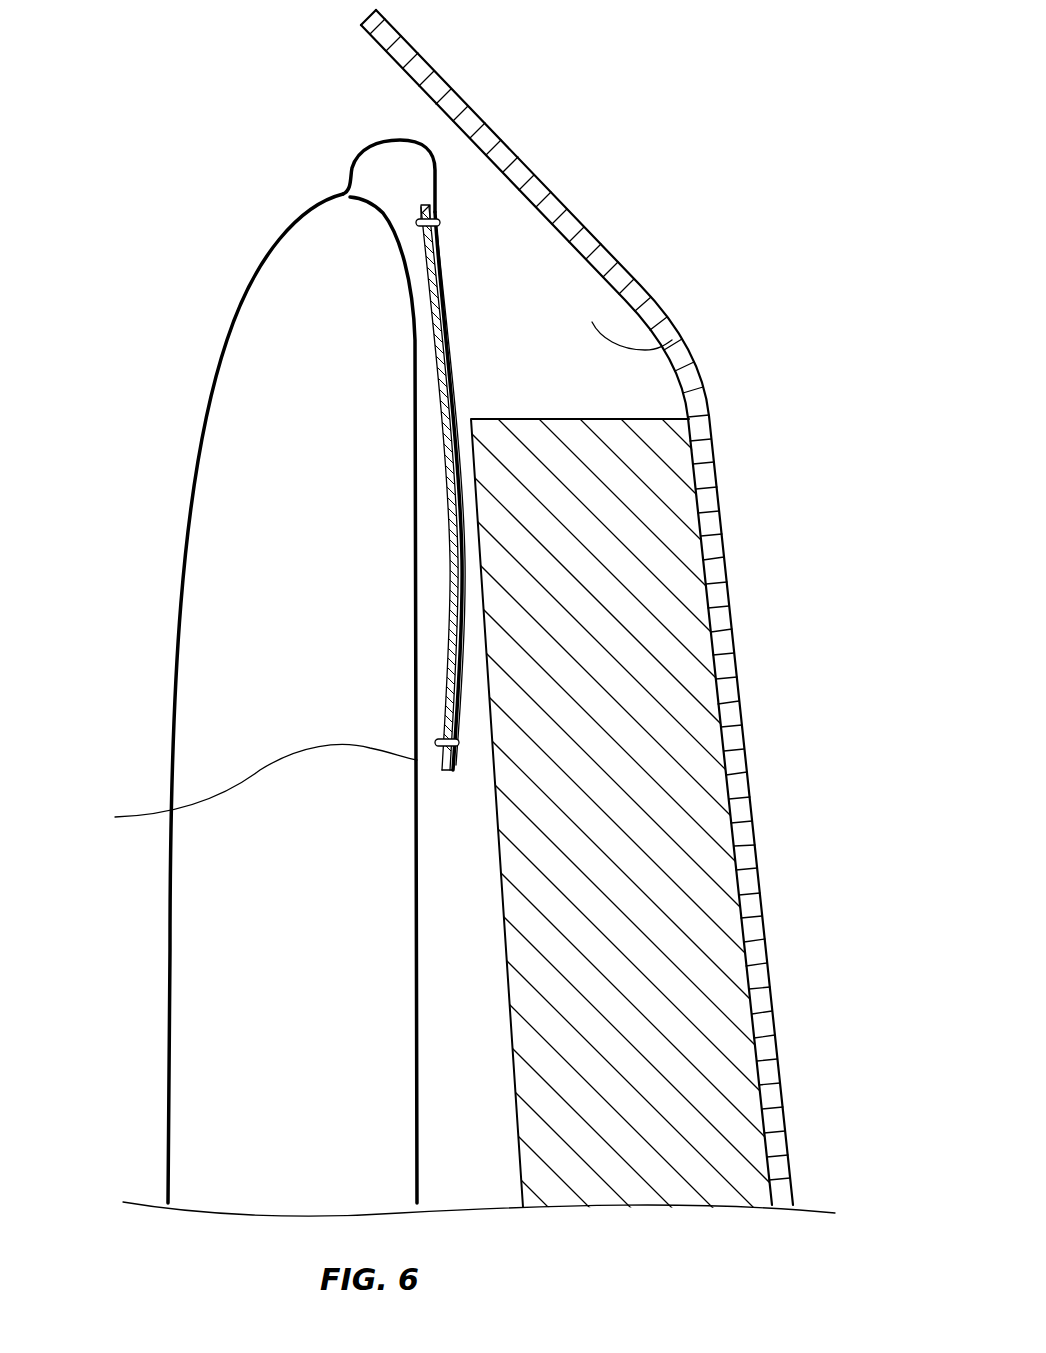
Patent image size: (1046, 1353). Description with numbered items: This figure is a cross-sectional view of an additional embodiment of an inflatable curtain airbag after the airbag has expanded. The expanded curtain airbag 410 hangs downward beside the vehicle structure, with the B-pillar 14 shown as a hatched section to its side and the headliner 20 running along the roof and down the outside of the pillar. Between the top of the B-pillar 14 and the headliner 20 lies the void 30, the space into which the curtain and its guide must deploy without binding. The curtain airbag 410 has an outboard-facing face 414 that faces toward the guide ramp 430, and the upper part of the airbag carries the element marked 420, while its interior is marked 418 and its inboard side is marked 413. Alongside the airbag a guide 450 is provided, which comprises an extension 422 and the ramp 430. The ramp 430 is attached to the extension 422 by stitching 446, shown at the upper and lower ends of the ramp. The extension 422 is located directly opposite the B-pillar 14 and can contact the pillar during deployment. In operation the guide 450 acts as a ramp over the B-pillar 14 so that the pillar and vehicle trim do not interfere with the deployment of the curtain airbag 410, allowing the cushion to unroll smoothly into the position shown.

The B-pillar 14 is at (567, 418).
The headliner 20 is at (620, 262).
The void 30 is at (672, 340).
The curtain airbag 410 is at (256, 649).
The outer surface 413 is at (188, 513).
The outboard-facing face 414 is at (247, 787).
The body 418 is at (355, 700).
The tip 420 is at (372, 147).
The extension 422 is at (445, 282).
The ramp 430 is at (440, 240).
The stitching 446 is at (440, 221).
The guide 450 is at (533, 448).